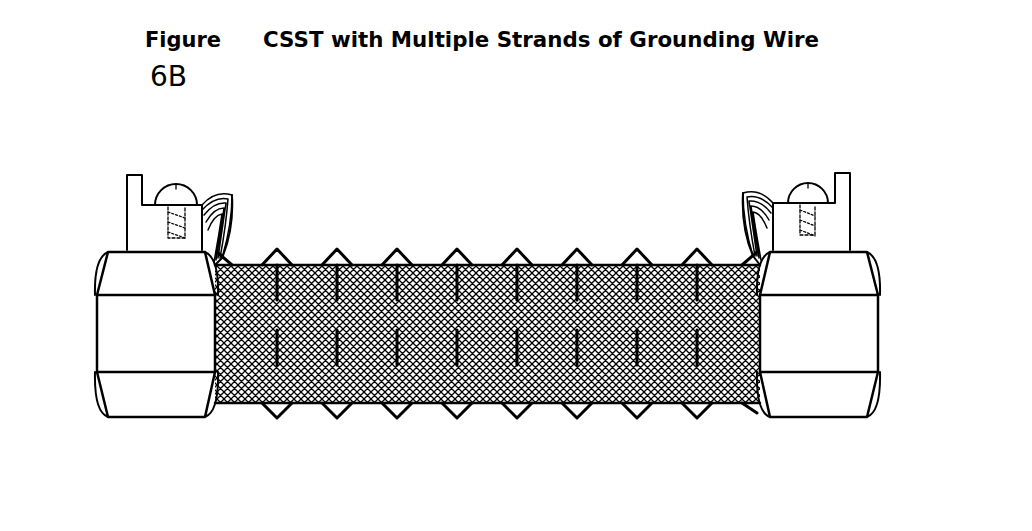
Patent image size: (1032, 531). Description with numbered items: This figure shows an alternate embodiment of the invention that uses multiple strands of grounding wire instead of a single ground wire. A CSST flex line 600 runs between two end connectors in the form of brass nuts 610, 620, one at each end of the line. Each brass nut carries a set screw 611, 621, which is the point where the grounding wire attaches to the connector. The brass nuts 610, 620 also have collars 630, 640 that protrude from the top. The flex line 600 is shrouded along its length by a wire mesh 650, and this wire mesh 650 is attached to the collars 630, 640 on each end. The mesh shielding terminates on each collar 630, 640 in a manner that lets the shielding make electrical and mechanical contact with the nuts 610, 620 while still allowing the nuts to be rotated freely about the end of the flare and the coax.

The CSST flex line 600 is at (476, 461).
The brass nut 610 is at (185, 440).
The set screw 611 is at (183, 180).
The brass nut 620 is at (805, 428).
The set screw 621 is at (815, 173).
The collar 630 is at (236, 213).
The collar 640 is at (735, 207).
The wire mesh 650 is at (428, 262).